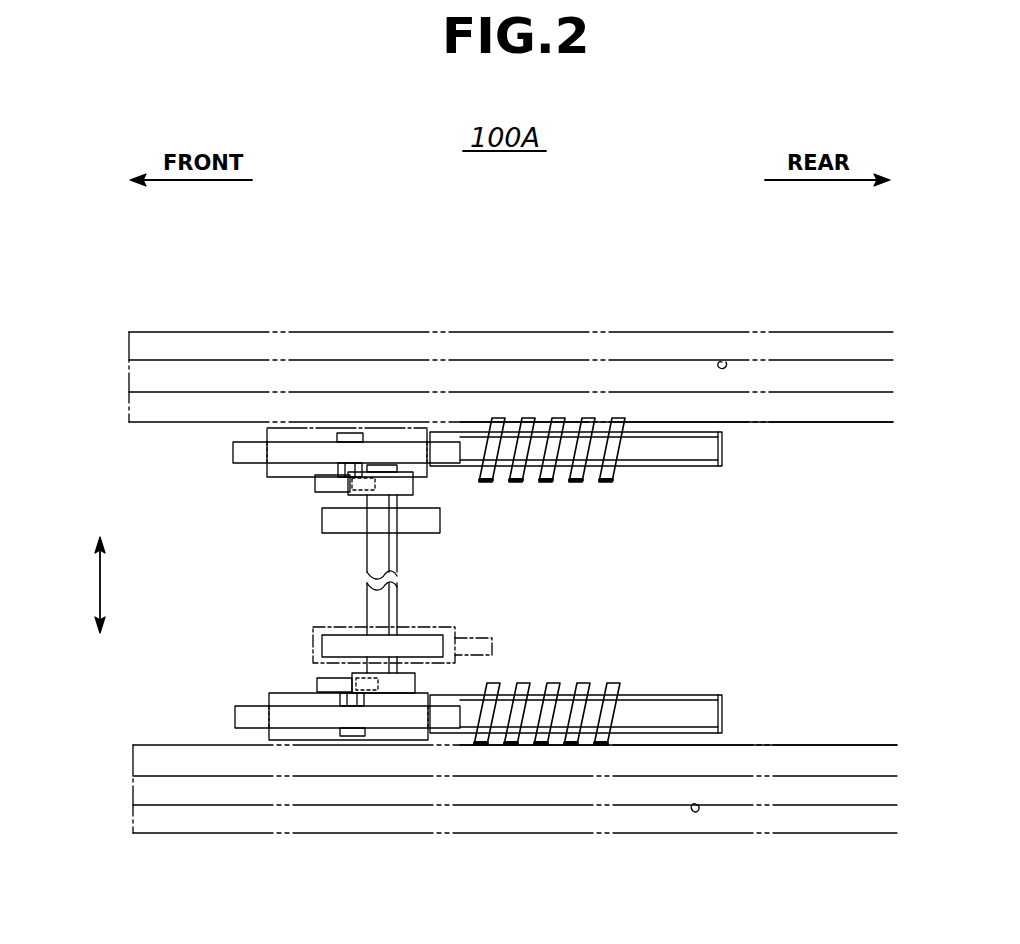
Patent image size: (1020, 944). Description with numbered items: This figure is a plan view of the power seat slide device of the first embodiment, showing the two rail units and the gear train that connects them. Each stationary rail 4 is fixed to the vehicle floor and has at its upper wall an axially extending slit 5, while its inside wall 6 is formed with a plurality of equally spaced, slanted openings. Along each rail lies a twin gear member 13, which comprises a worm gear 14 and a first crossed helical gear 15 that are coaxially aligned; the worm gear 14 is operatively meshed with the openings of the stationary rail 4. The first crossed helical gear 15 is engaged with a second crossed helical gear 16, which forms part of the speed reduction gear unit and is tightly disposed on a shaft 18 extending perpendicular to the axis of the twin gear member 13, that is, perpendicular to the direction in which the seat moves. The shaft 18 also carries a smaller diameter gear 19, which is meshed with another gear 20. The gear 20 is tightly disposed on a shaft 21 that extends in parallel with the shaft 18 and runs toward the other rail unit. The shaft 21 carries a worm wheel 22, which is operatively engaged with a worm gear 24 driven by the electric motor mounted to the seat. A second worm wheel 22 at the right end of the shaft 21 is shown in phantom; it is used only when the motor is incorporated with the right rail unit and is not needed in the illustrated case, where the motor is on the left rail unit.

The stationary rail 4 is at (803, 331).
The slit 5 is at (722, 362).
The inside wall 6 is at (800, 424).
The twin gear member 13 is at (509, 495).
The worm gear 14 is at (611, 484).
The first crossed helical gear 15 is at (282, 478).
The second crossed helical gear 16 is at (233, 452).
The shaft 18 is at (350, 433).
The smaller diameter gear 19 is at (325, 492).
The gear 20 is at (414, 487).
The shaft 21 is at (397, 607).
The worm wheel 22 is at (441, 520).
The worm gear 24 is at (333, 627).